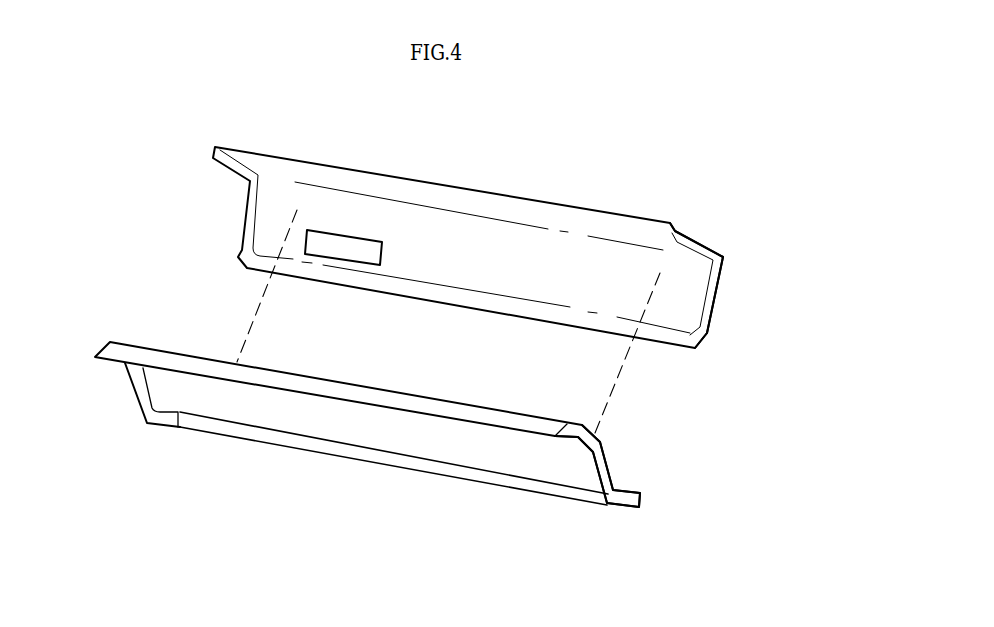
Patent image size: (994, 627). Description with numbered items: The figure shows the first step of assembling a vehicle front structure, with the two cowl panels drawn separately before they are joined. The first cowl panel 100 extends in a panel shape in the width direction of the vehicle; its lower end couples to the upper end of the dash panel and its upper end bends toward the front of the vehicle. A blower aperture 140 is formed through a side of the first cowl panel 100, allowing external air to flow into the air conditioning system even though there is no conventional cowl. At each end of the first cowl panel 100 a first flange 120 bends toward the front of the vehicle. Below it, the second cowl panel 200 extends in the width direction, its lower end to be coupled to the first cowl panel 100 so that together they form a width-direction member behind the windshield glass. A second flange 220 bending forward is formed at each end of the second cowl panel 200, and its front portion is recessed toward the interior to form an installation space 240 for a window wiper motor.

The first cowl panel 100 is at (513, 221).
The first flange 120 is at (708, 303).
The blower aperture 140 is at (347, 247).
The second cowl panel 200 is at (348, 457).
The second flange 220 is at (598, 473).
The installation space 240 is at (127, 380).